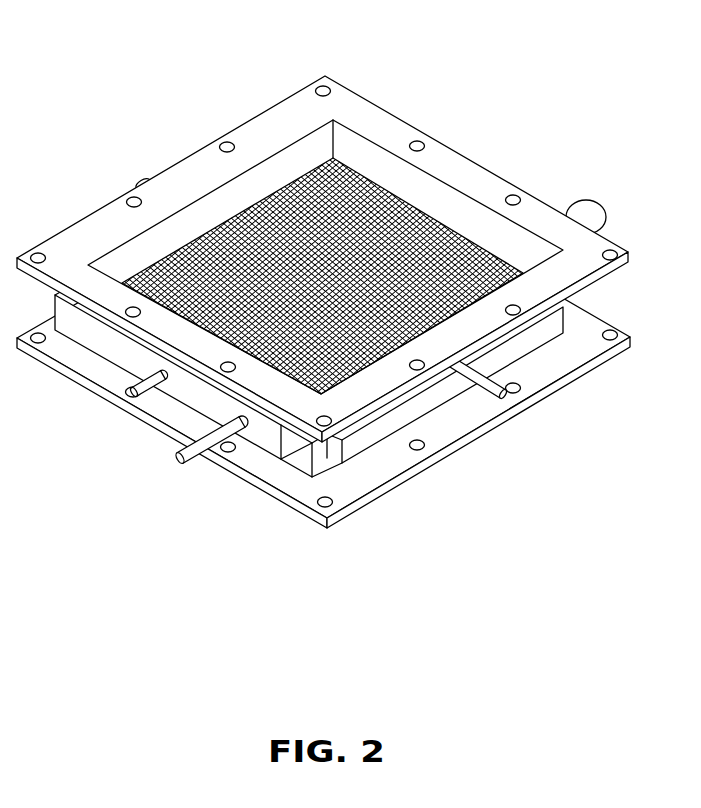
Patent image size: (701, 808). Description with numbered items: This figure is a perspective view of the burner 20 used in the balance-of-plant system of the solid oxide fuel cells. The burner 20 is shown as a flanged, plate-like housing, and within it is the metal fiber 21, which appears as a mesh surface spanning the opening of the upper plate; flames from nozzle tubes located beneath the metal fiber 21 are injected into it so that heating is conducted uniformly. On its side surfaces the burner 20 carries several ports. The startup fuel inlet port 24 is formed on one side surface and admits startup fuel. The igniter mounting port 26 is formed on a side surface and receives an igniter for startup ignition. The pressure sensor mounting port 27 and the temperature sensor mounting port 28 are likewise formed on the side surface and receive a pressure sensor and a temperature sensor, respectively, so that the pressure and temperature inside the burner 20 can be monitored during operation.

The burner 20 is at (323, 287).
The metal fiber 21 is at (271, 252).
The startup fuel inlet port 24 is at (510, 379).
The igniter mounting port 26 is at (588, 216).
The pressure sensor mounting port 27 is at (199, 452).
The temperature sensor mounting port 28 is at (132, 388).